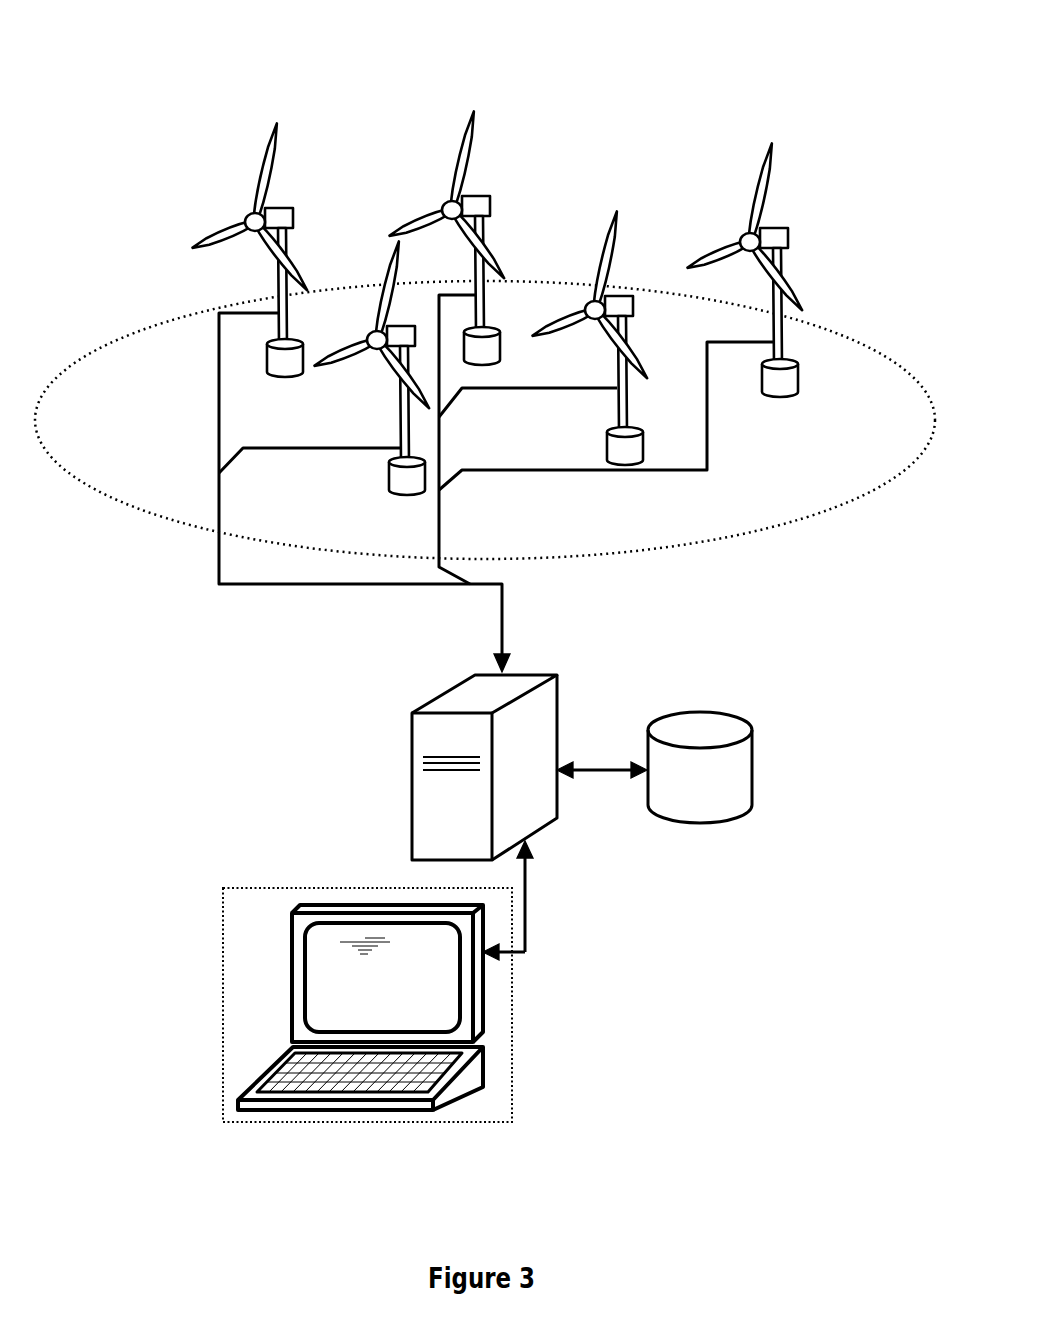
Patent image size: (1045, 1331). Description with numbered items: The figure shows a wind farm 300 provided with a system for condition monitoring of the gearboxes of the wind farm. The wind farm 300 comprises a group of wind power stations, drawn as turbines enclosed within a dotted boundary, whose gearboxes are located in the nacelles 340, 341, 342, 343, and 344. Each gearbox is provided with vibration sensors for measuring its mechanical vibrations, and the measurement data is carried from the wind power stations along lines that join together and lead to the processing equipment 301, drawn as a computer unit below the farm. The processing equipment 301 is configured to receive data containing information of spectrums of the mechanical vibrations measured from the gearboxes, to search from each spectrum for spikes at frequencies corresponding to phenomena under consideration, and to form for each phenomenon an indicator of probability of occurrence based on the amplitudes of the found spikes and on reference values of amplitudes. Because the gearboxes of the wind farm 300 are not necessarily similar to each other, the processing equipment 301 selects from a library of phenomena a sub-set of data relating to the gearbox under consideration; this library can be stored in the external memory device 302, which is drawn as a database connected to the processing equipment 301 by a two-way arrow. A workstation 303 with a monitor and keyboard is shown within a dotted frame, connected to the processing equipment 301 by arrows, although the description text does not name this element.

The wind farm 300 is at (343, 80).
The processing equipment 301 is at (412, 735).
The external memory device 302 is at (677, 795).
The workstation / user interface 303 is at (512, 1020).
The nacelle 340 is at (282, 207).
The nacelle 341 is at (382, 360).
The nacelle 342 is at (473, 198).
The nacelle 343 is at (612, 295).
The nacelle 344 is at (773, 228).